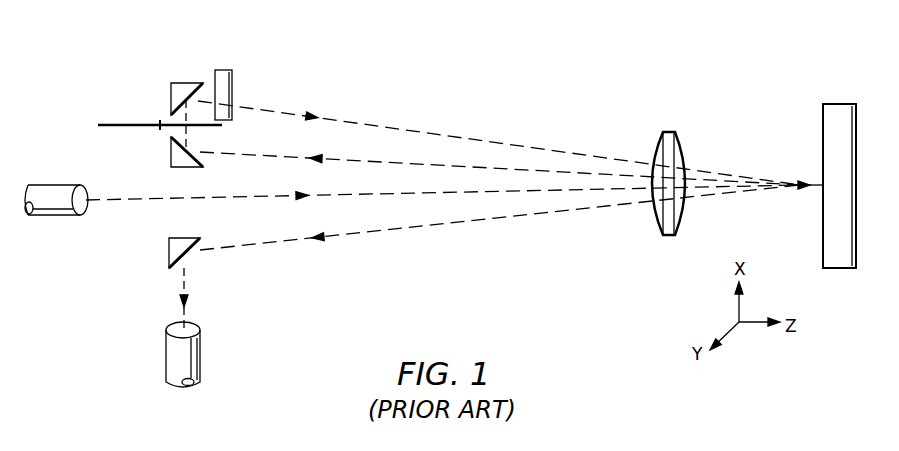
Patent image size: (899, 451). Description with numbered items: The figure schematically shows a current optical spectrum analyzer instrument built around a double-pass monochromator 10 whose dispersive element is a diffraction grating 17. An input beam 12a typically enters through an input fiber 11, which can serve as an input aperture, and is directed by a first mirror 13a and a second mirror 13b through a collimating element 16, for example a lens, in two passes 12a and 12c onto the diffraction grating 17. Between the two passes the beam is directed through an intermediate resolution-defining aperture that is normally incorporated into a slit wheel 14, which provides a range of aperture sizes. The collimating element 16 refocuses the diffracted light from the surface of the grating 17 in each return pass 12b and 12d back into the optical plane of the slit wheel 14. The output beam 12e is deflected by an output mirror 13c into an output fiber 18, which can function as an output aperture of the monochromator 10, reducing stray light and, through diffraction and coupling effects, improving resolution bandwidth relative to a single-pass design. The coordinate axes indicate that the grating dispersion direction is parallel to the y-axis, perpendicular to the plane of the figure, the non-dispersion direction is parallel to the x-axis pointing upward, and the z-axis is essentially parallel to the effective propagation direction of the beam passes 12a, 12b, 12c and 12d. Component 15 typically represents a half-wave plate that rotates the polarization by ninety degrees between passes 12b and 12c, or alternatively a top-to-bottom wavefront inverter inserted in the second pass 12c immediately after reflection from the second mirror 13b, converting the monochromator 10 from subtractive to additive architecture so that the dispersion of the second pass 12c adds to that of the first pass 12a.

The double-pass monochromator 10 is at (616, 90).
The input fiber 11 is at (53, 184).
The input beam 12a is at (567, 193).
The first pass 12b is at (550, 170).
The second pass 12c is at (473, 139).
The second pass return beam 12d is at (492, 221).
The output beam 12e is at (187, 276).
The first mirror 13a is at (167, 152).
The second mirror 13b is at (183, 83).
The output mirror 13c is at (166, 255).
The slit wheel 14 is at (135, 122).
The half-wave plate 15 is at (233, 85).
The collimating element 16 is at (672, 132).
The diffraction grating 17 is at (842, 104).
The output fiber 18 is at (165, 357).